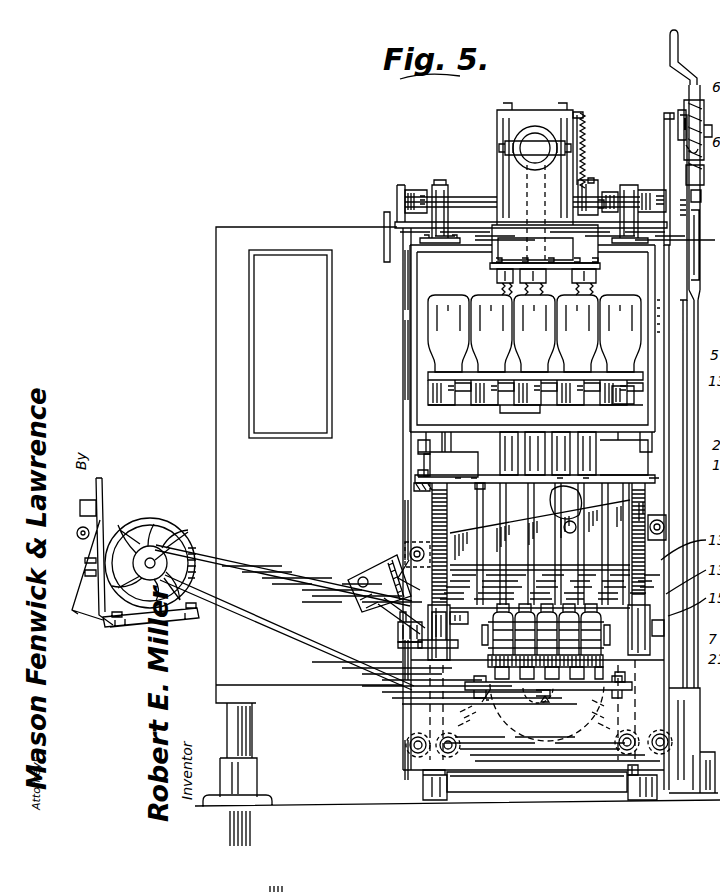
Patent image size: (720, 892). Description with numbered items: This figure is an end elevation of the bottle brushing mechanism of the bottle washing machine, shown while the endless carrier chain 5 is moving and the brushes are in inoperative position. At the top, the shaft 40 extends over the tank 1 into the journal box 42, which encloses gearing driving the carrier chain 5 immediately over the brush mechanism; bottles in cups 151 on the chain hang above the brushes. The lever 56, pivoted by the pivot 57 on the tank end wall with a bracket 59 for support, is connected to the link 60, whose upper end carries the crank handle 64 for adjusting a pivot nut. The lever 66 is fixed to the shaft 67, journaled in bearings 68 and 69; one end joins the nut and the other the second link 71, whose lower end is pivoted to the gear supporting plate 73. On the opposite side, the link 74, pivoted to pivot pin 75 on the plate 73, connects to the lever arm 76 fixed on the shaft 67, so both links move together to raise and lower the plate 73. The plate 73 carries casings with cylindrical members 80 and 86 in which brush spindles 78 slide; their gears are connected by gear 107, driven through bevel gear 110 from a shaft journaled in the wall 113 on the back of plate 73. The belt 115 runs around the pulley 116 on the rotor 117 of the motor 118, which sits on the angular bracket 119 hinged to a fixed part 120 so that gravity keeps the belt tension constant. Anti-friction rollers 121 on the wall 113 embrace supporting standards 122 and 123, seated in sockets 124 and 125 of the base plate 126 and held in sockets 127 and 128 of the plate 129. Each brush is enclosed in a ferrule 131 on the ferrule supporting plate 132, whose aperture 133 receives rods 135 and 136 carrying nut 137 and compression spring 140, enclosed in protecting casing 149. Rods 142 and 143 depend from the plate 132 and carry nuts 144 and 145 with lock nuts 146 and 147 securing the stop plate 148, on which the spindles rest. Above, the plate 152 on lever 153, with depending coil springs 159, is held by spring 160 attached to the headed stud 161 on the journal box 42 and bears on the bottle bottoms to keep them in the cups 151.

The tank 1 is at (288, 228).
The carrier chain 5 is at (439, 297).
The shaft 40 is at (505, 135).
The journal box 42 is at (547, 109).
The lever 56 is at (408, 549).
The pivot 57 is at (408, 559).
The bracket 59 is at (364, 576).
The link 60 is at (694, 281).
The crank handle 64 is at (668, 51).
The lever 66 is at (667, 146).
The shaft 67 is at (484, 185).
The bearing 68 is at (637, 185).
The bearing 69 is at (446, 172).
The second link 71 is at (662, 368).
The gear supporting plate 73 is at (474, 640).
The link 74 is at (404, 372).
The pivot pin 75 is at (404, 644).
The lever arm 76 is at (396, 210).
The spindle 78 is at (515, 512).
The cylindrical member 80 is at (524, 605).
The second cylindrical member 86 is at (545, 660).
The gear 107 is at (412, 690).
The bevel gear 110 is at (545, 697).
The wall 113 is at (405, 718).
The belt 115 is at (275, 545).
The pulley 116 is at (154, 555).
The rotor 117 is at (142, 545).
The motor 118 is at (155, 560).
The angular bracket 119 is at (182, 615).
The fixed part 120 is at (96, 478).
The anti-friction rollers 121 is at (408, 753).
The supporting standard 122 is at (632, 772).
The supporting standard 123 is at (417, 465).
The socket 124 is at (645, 798).
The socket 125 is at (423, 793).
The base plate 126 is at (578, 792).
The socket 127 is at (648, 432).
The socket 128 is at (408, 452).
The plate 129 is at (450, 422).
The ferrule 131 is at (563, 432).
The ferrule supporting plate 132 is at (420, 488).
The aperture 133 is at (440, 480).
The rod 135 is at (418, 474).
The rod 136 is at (654, 586).
The nut 137 is at (400, 610).
The compression coil spring 140 is at (432, 519).
The rod 142 is at (477, 500).
The rod 143 is at (578, 698).
The nut 144 is at (478, 684).
The nut 145 is at (618, 690).
The lock nut 146 is at (480, 695).
The lock nut 147 is at (648, 718).
The plate 148 is at (518, 694).
The protecting casing 149 is at (420, 646).
The cup 151 is at (588, 400).
The plate 152 is at (490, 268).
The lever 153 is at (590, 180).
The coil spring 159 is at (598, 282).
The spring 160 is at (590, 130).
The headed stud 161 is at (584, 115).